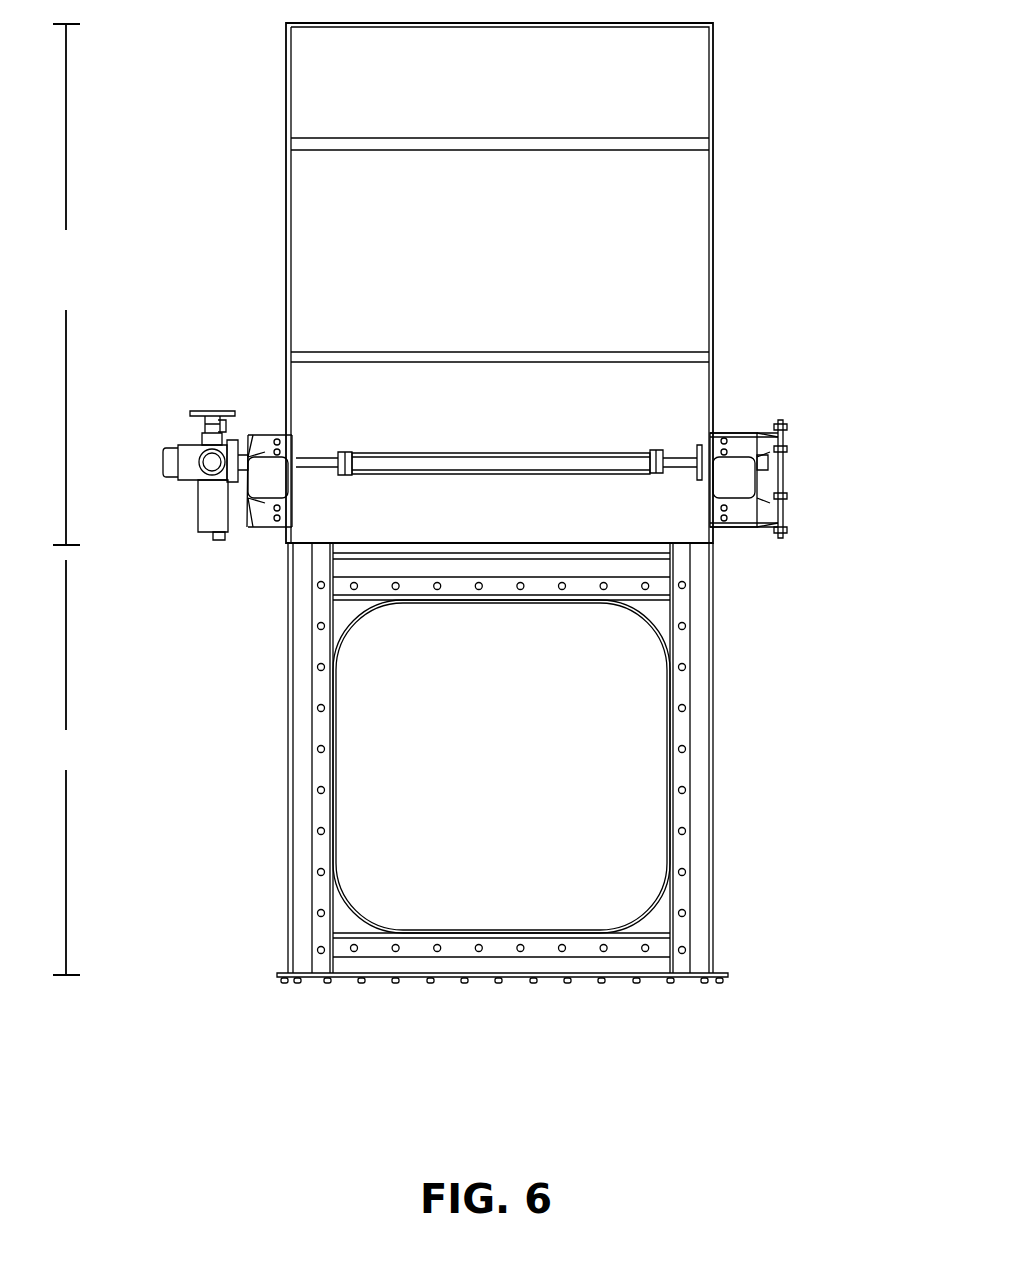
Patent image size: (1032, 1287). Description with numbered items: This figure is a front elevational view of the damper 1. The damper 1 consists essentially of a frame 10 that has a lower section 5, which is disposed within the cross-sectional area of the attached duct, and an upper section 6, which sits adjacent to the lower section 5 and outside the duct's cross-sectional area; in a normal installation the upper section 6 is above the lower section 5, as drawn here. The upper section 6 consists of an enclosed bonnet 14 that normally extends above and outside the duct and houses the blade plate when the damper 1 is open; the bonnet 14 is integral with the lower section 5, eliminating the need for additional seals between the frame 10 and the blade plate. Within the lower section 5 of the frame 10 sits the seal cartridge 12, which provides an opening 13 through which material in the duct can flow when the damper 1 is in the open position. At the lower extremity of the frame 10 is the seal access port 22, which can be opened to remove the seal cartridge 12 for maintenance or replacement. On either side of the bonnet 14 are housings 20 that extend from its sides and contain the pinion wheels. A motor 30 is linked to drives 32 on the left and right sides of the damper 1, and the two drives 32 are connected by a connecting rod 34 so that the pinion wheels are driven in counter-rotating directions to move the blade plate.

The damper 1 is at (750, 172).
The lower section 5 is at (66, 767).
The upper section 6 is at (66, 284).
The frame 10 is at (703, 781).
The seal cartridge 12 is at (640, 612).
The opening 13 is at (520, 797).
The bonnet 14 is at (683, 86).
The housing 20 is at (760, 420).
The seal access port 22 is at (655, 980).
The motor 30 is at (192, 447).
The drive 32 is at (252, 450).
The connecting rod 34 is at (620, 450).